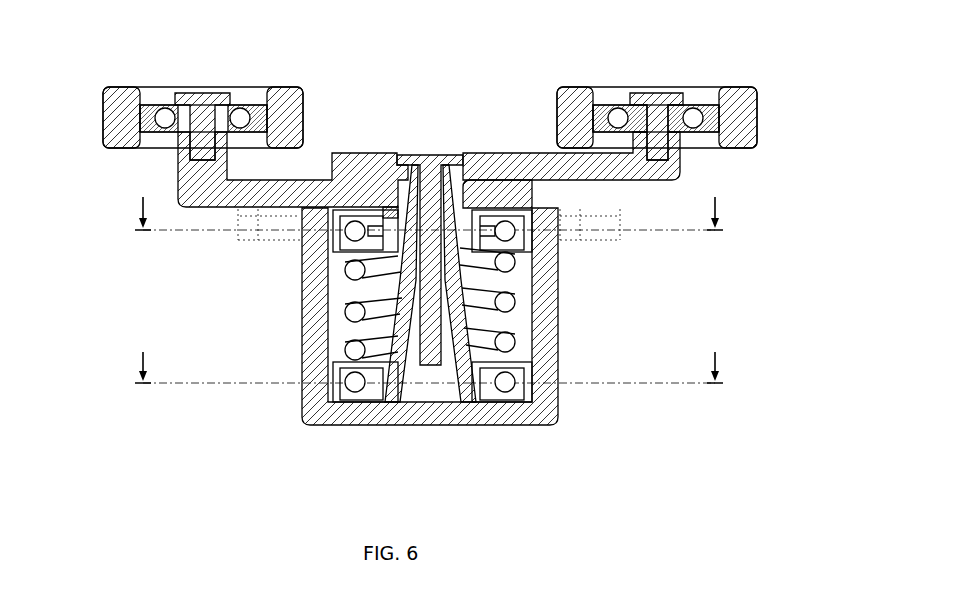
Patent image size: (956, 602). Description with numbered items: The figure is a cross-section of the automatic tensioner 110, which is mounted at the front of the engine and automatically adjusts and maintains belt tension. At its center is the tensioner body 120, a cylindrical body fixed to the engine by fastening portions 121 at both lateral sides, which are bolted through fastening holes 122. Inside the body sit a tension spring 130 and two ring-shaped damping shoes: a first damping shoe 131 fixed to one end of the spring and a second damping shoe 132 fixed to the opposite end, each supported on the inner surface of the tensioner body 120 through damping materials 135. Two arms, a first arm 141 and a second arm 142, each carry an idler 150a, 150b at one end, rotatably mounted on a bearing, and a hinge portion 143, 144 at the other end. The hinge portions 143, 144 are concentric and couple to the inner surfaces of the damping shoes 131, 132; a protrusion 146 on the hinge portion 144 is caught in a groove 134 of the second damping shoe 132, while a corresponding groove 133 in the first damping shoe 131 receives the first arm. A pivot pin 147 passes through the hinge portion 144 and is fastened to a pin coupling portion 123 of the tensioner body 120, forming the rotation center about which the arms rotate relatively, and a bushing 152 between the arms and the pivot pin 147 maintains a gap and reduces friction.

The automatic tensioner 110 is at (286, 422).
The tensioner body 120 is at (552, 340).
The fastening portions 121 is at (240, 233).
The fastening holes 122 is at (262, 222).
The pin coupling portion 123 is at (455, 408).
The tension spring 130 is at (534, 290).
The first damping shoe 131 is at (388, 216).
The second damping shoe 132 is at (335, 407).
The groove 133 is at (395, 203).
The groove 134 is at (375, 407).
The damping materials 135 is at (534, 240).
The first arm 141 is at (182, 208).
The second arm 142 is at (577, 152).
The hinge portion 143 is at (488, 182).
The hinge portion 144 is at (460, 166).
The protrusion 146 is at (306, 262).
The pivot pin 147 is at (433, 364).
The idler 150a is at (125, 95).
The idler 150b is at (748, 115).
The bushing 152 is at (430, 154).